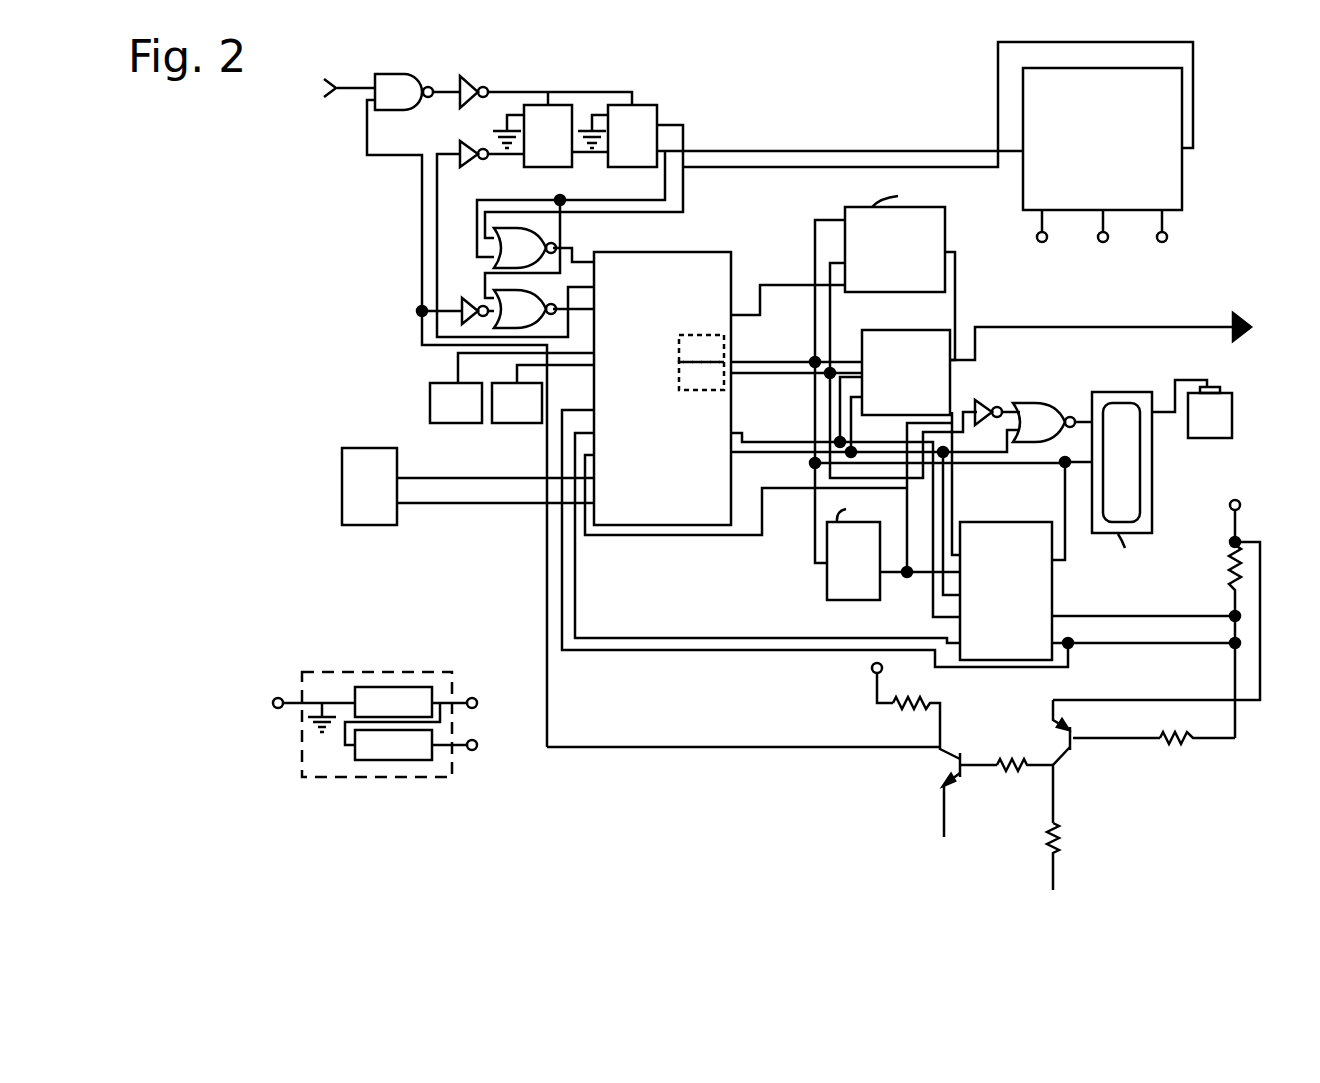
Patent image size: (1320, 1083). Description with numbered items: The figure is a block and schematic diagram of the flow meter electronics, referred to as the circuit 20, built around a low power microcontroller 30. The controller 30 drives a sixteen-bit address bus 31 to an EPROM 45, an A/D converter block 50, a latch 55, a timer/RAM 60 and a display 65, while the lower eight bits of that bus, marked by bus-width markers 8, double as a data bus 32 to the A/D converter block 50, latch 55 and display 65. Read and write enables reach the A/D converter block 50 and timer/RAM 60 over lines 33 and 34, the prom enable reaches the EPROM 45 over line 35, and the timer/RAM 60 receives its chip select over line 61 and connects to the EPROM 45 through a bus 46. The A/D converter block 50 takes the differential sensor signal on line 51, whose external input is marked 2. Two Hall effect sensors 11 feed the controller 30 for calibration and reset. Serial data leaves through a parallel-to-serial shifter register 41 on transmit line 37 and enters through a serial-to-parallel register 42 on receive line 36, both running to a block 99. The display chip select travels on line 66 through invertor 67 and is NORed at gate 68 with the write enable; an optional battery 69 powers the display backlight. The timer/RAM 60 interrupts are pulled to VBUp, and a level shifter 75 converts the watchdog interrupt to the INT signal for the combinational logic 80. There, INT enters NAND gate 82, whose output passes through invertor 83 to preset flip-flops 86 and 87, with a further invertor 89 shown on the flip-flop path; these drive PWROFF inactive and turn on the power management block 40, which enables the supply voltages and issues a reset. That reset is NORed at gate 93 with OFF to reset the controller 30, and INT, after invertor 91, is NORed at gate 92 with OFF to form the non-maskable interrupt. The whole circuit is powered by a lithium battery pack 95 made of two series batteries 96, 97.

The antenna / connection 2 is at (1123, 314).
The 8-bit bus 8 is at (827, 228).
The Hall effect sensor 11 is at (444, 416).
The circuit 20 is at (400, 594).
The microcontroller 30 is at (702, 366).
The address bus 31 is at (815, 222).
The data bus 32 is at (832, 296).
The read enable line 33 is at (766, 442).
The write enable line 34 is at (757, 452).
The prom enable line 35 is at (770, 284).
The receive line 36 is at (470, 505).
The transmit line 37 is at (478, 478).
The power management block 40 is at (1086, 197).
The parallel-to-serial shifter register 41 is at (701, 348).
The serial-to-parallel register 42 is at (701, 376).
The EPROM 45 is at (874, 274).
The bus 46 is at (957, 252).
The A/D converter block 50 is at (889, 358).
The line 51 is at (1018, 327).
The latch 55 is at (838, 596).
The timer/RAM 60 is at (988, 555).
The chip select line 61 is at (652, 638).
The display 65 is at (1100, 392).
The line 66 is at (690, 526).
The invertor 67 is at (985, 400).
The NOR gate 68 is at (1023, 435).
The battery 69 is at (1195, 427).
The level shifter 75 is at (840, 814).
The combinational logic 80 is at (390, 252).
The NAND gate 82 is at (398, 74).
The invertor 83 is at (472, 76).
The flip-flop 86 is at (532, 132).
The flip-flop 87 is at (640, 104).
The inverter 89 is at (479, 128).
The invertor 91 is at (470, 298).
The NOR gate 92 is at (504, 322).
The NOR gate 93 is at (504, 261).
The lithium battery pack 95 is at (376, 758).
The lithium battery 96 is at (378, 715).
The lithium battery 97 is at (378, 758).
The serial interface 99 is at (353, 497).